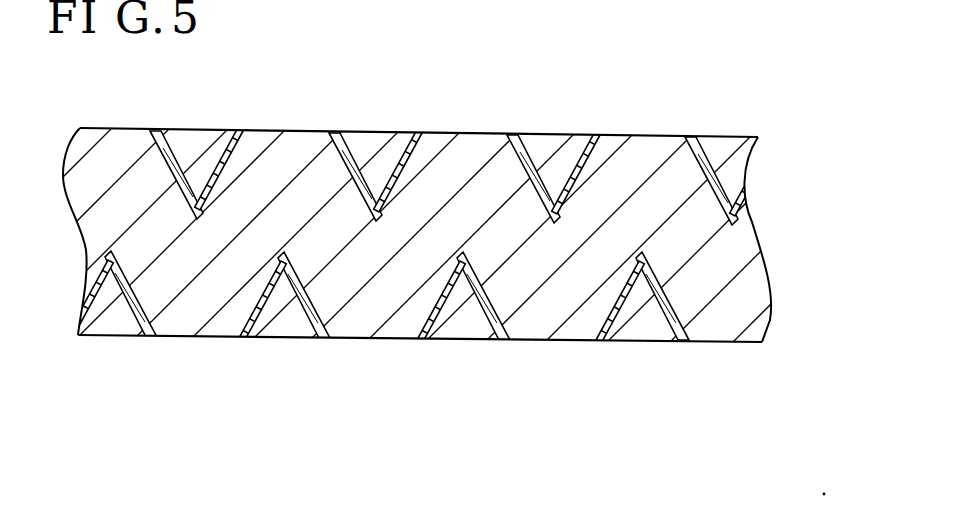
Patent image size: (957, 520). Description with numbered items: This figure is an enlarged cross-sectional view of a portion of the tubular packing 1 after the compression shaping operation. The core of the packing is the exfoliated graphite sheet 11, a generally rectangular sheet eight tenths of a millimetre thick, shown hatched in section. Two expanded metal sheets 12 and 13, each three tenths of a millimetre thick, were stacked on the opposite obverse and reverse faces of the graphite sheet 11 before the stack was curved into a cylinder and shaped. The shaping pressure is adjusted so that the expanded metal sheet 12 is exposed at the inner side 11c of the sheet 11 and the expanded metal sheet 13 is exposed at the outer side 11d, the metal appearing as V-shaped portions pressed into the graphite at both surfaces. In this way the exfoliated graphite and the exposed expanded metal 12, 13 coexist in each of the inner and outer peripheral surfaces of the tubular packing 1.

The tubular packing 1 is at (768, 168).
The exfoliated graphite sheet 11 is at (735, 260).
The inner side of the sheet 11c is at (312, 131).
The outer side of the sheet 11d is at (360, 338).
The expanded metal sheet 12 is at (718, 177).
The expanded metal sheet 13 is at (668, 322).